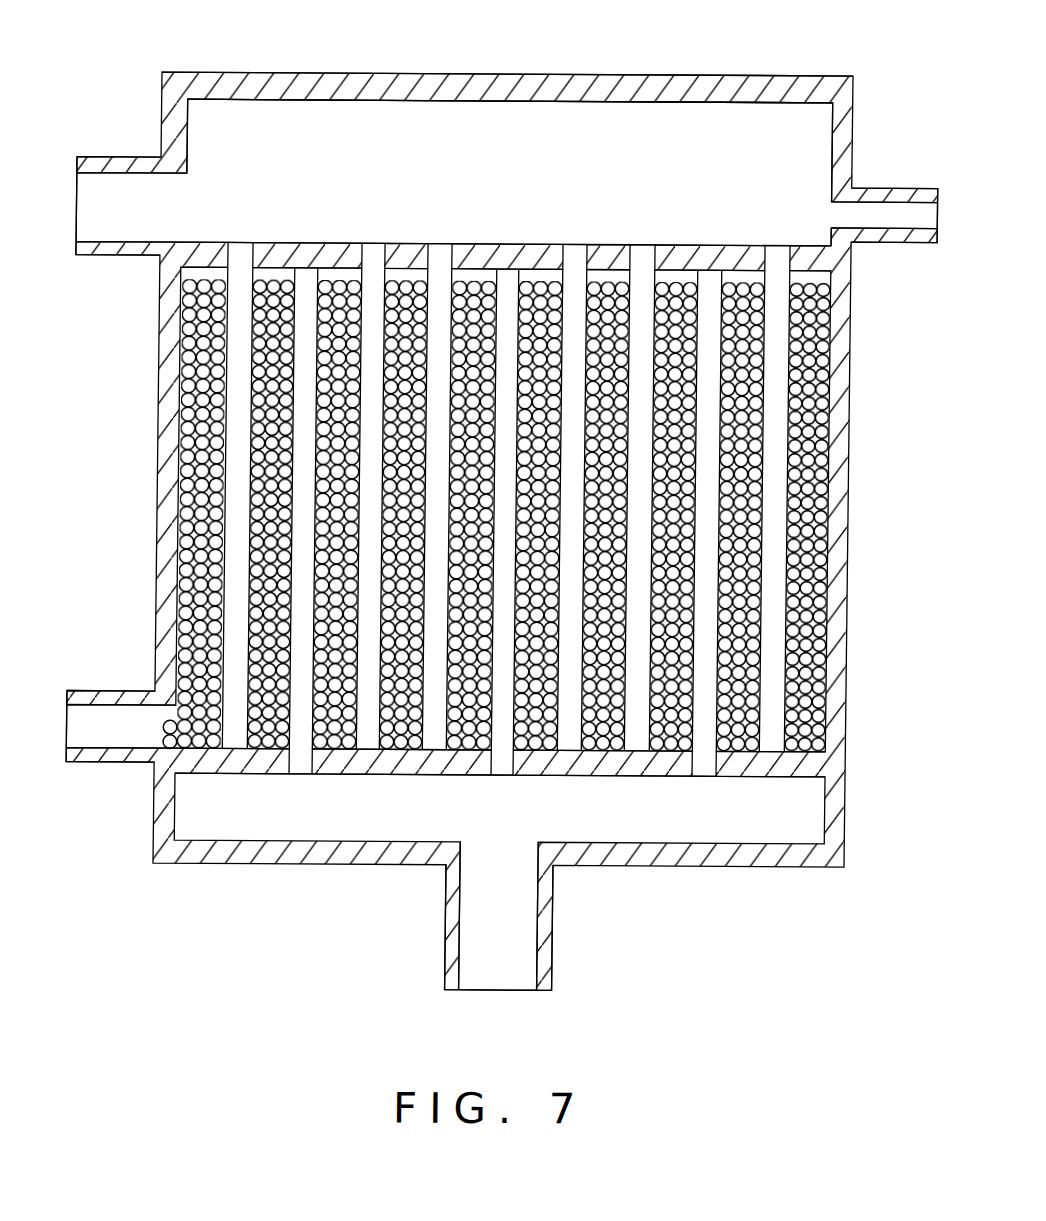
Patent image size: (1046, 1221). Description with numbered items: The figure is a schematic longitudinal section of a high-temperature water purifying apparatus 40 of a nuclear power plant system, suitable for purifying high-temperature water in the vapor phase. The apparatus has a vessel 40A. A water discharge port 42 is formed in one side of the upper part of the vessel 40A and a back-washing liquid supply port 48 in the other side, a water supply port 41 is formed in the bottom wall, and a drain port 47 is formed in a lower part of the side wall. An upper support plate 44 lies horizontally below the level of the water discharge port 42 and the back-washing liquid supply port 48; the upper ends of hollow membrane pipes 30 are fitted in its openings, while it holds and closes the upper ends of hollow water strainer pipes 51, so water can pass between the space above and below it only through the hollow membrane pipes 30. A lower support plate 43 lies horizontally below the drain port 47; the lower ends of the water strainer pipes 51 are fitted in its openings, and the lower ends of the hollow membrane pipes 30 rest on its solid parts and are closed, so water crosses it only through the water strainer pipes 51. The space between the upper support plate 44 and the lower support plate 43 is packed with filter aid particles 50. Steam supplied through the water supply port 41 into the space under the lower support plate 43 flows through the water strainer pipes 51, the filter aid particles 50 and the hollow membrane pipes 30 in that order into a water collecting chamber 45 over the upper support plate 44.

The high-temperature water purifying apparatus 40 is at (245, 67).
The vessel 40A is at (762, 86).
The water supply port 41 is at (533, 921).
The water discharge port 42 is at (122, 224).
The lower support plate 43 is at (378, 770).
The upper support plate 44 is at (333, 249).
The water collecting chamber 45 is at (498, 220).
The drain port 47 is at (150, 735).
The back-washing liquid supply port 48 is at (872, 205).
The filter aid particles 50 is at (748, 383).
The hollow membrane pipes 30 is at (773, 487).
The water strainer pipes 51 is at (712, 721).